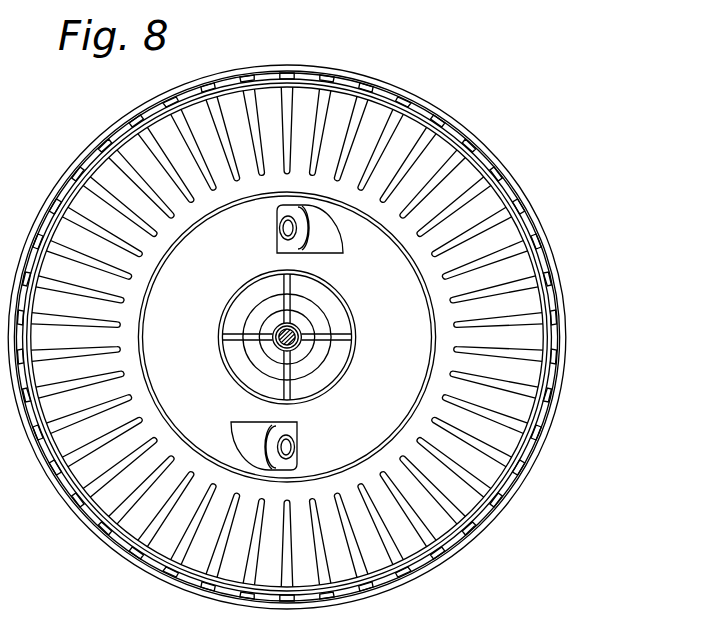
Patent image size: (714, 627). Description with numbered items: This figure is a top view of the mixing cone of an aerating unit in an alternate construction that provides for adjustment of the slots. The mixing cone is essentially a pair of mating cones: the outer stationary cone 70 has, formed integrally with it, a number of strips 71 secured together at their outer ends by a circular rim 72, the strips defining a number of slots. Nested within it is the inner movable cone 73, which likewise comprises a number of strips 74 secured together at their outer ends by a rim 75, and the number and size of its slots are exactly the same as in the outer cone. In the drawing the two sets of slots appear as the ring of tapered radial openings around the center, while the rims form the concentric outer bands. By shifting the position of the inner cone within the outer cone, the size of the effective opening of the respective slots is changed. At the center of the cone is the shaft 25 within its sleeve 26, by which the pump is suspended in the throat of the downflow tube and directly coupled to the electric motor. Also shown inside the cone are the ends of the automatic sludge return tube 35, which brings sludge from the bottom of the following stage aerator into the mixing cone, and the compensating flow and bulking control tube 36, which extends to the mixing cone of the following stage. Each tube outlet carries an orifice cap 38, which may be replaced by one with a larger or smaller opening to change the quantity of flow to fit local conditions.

The shaft 25 is at (294, 328).
The sleeve 26 is at (301, 345).
The automatic sludge return tube 35 is at (340, 253).
The compensating flow and bulking control tube 36 is at (253, 428).
The orifice cap 38 is at (285, 242).
The outer stationary cone 70 is at (417, 388).
The strips 71 is at (527, 458).
The circular rim 72 is at (552, 428).
The inner movable cone 73 is at (417, 423).
The strips 74 is at (463, 503).
The rim 75 is at (500, 483).